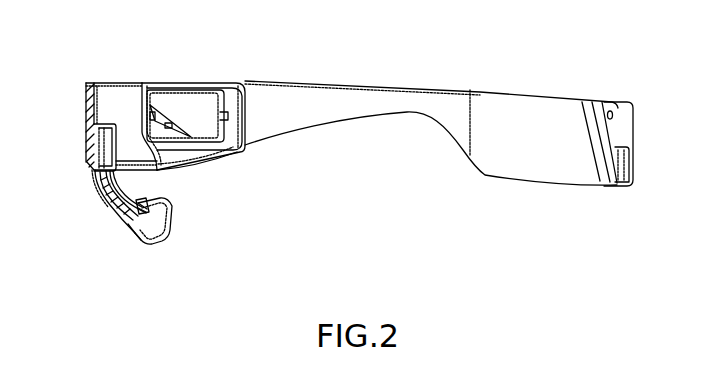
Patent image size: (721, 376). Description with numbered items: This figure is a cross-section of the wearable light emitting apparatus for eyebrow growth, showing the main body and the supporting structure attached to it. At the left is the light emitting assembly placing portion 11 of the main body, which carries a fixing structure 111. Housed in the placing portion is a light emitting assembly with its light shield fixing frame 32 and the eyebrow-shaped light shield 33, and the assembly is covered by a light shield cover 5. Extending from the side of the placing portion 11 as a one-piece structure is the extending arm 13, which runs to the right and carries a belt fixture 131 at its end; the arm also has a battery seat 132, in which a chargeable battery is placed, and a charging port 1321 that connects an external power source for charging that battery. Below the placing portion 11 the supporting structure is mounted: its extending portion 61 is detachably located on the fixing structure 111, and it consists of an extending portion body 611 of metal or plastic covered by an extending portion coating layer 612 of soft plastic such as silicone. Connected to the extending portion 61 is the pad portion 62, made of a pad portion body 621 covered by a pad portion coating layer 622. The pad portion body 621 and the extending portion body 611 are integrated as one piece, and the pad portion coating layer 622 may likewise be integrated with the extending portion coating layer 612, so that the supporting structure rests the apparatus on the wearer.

The light emitting assembly placing portion 11 is at (85, 95).
The fixing structure 111 is at (104, 122).
The light shield cover 5 is at (182, 87).
The light shield fixing frame 32 is at (223, 92).
The eyebrow-shaped light shield 33 is at (205, 140).
The extending arm 13 is at (367, 90).
The belt fixture 131 is at (621, 112).
The battery seat 132 is at (472, 167).
The charging port 1321 is at (620, 190).
The extending portion 61 is at (90, 188).
The extending portion body 611 is at (124, 182).
The extending portion coating layer 612 is at (110, 207).
The pad portion 62 is at (140, 245).
The pad portion body 621 is at (142, 191).
The pad portion coating layer 622 is at (123, 225).